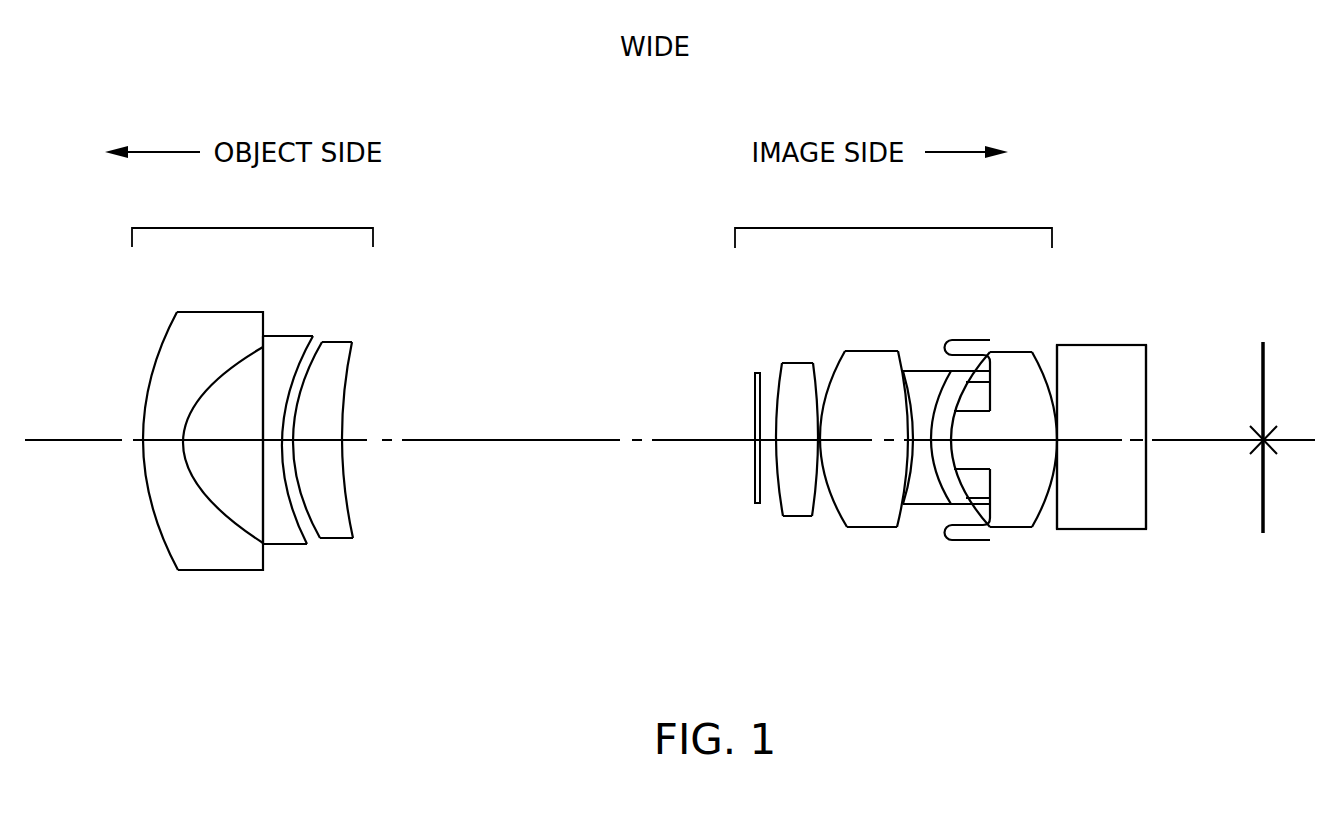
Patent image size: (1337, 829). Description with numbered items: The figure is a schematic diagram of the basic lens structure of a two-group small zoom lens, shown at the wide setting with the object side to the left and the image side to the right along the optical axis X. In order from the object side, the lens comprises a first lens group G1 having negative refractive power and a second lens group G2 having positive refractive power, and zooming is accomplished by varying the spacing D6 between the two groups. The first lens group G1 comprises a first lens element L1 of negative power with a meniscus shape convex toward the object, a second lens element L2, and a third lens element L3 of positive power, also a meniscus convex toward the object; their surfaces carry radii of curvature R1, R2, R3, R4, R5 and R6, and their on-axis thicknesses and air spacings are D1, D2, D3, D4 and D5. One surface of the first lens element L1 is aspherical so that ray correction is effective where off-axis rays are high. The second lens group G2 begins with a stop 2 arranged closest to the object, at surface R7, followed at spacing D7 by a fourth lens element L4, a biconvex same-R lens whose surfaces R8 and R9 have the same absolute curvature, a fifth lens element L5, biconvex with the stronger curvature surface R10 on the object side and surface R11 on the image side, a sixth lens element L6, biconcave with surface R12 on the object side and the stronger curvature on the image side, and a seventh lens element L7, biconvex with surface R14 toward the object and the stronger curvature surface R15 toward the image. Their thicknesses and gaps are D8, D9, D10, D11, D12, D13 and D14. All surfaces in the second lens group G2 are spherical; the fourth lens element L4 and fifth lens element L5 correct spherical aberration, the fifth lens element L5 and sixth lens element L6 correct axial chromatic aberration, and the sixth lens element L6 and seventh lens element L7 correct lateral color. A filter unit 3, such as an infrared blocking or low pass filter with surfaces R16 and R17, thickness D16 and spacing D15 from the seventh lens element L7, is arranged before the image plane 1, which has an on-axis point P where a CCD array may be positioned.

The optical axis X is at (97, 440).
The first lens group G1 is at (252, 223).
The second lens group G2 is at (893, 223).
The first lens element L1 is at (180, 454).
The second lens element L2 is at (311, 442).
The third lens element L3 is at (351, 449).
The fourth lens element L4 is at (785, 447).
The fifth lens element L5 is at (933, 448).
The sixth lens element L6 is at (919, 455).
The seventh lens element L7 is at (1017, 439).
The radius of curvature of first surface R1 is at (162, 342).
The radius of curvature of second surface R2 is at (260, 345).
The radius of curvature of third surface R3 is at (279, 333).
The radius of curvature of fourth surface R4 is at (312, 340).
The radius of curvature of fifth surface R5 is at (318, 346).
The radius of curvature of sixth surface R6 is at (351, 366).
The radius of curvature of seventh surface R7 is at (753, 403).
The radius of curvature of eighth surface R8 is at (782, 365).
The radius of curvature of ninth surface R9 is at (816, 365).
The radius of curvature of tenth surface R10 is at (843, 355).
The radius of curvature of eleventh surface R11 is at (902, 360).
The radius of curvature of twelfth surface R12 is at (897, 402).
The radius of curvature of fourteenth surface R14 is at (990, 340).
The radius of curvature of fifteenth surface R15 is at (1040, 350).
The radius of curvature of sixteenth surface R16 is at (1053, 347).
The radius of curvature of seventeenth surface R17 is at (1147, 360).
The on-axis surface spacing D1 is at (167, 440).
The on-axis surface spacing D2 is at (205, 437).
The on-axis surface spacing D3 is at (265, 446).
The on-axis surface spacing D4 is at (291, 436).
The on-axis surface spacing D5 is at (310, 443).
The on-axis surface spacing D6 is at (465, 440).
The on-axis surface spacing D7 is at (758, 446).
The on-axis surface spacing D8 is at (788, 437).
The on-axis surface spacing D9 is at (821, 433).
The on-axis surface spacing D10 is at (852, 435).
The on-axis surface spacing D11 is at (900, 450).
The on-axis surface spacing D12 is at (922, 444).
The on-axis surface spacing D13 is at (946, 456).
The on-axis surface spacing D14 is at (1005, 440).
The on-axis surface spacing D15 is at (1065, 423).
The on-axis surface spacing D16 is at (1095, 438).
The image plane 1 is at (1258, 363).
The stop 2 is at (752, 505).
The filter unit 3 is at (1128, 444).
The on-axis point P is at (1253, 447).